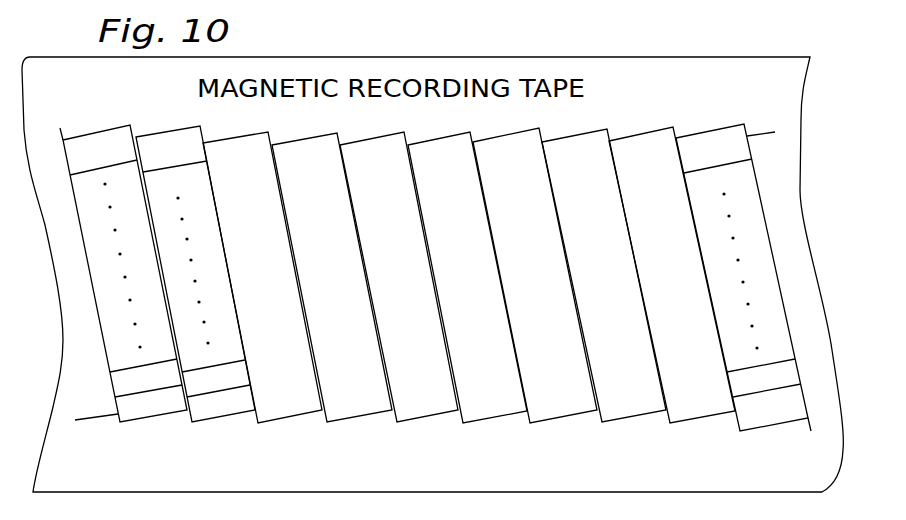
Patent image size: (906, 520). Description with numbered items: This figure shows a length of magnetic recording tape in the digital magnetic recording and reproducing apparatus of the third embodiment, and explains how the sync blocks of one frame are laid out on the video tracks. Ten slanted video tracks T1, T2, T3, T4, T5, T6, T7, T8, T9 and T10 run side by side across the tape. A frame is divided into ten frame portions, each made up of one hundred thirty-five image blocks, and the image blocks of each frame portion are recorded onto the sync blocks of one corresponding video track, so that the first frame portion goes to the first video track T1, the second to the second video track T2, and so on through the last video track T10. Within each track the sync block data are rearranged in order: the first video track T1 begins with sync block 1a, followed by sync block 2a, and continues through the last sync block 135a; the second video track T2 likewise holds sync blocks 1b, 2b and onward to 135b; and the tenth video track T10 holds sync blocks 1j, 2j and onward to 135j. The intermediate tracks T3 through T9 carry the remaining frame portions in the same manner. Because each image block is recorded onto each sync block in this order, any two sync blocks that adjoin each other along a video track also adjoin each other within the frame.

The video track T1 is at (125, 303).
The video track T2 is at (195, 303).
The video track T3 is at (295, 422).
The video track T4 is at (368, 421).
The video track T5 is at (443, 420).
The video track T6 is at (507, 419).
The video track T7 is at (575, 415).
The video track T8 is at (643, 418).
The video track T9 is at (708, 420).
The video track T10 is at (742, 302).
The sync block data 135a is at (103, 153).
The sync block data 135b is at (174, 151).
The sync block data 135j is at (718, 152).
The sync block data 2a is at (143, 376).
The sync block data 2b is at (213, 377).
The sync block data 2j is at (761, 376).
The sync block data 1a is at (148, 402).
The sync block data 1b is at (218, 402).
The sync block data 1j is at (767, 403).